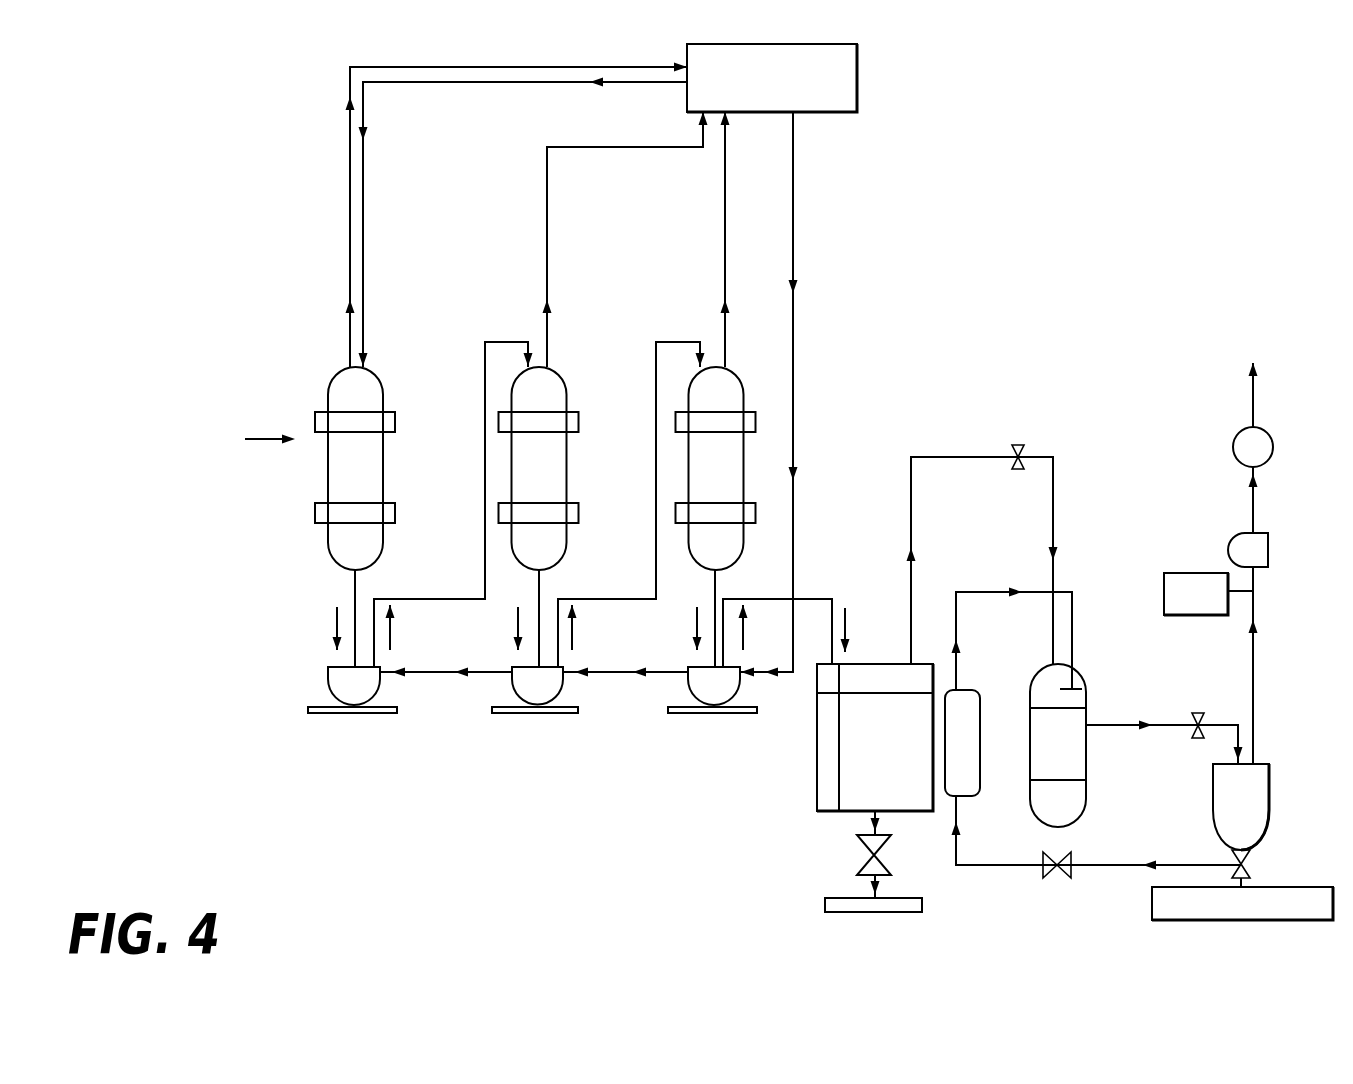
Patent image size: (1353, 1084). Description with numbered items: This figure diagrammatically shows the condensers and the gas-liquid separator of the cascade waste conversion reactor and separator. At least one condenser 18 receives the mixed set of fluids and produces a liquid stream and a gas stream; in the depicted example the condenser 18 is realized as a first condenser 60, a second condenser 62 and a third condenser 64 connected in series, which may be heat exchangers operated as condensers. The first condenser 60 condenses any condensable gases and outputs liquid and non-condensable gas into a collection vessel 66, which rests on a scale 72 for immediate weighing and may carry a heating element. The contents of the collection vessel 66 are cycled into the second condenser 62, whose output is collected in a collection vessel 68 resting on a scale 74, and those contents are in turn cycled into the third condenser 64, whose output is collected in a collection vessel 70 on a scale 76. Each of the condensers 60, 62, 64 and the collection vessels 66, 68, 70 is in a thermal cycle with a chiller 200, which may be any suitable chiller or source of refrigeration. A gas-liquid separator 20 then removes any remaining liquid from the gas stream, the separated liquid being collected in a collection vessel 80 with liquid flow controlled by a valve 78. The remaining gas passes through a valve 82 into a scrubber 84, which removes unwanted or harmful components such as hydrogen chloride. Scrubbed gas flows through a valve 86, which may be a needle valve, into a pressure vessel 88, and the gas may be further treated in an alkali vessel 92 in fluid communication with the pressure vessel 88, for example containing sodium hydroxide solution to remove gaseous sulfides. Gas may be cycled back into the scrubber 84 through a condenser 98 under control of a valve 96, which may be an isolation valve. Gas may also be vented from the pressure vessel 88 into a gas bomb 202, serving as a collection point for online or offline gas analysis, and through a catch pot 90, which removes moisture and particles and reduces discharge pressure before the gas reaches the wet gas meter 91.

The condenser 18 is at (497, 272).
The gas-liquid separator 20 is at (823, 827).
The first condenser 60 is at (328, 548).
The second condenser 62 is at (560, 365).
The third condenser 64 is at (737, 367).
The collection vessel 66 is at (328, 675).
The collection vessel 68 is at (512, 680).
The collection vessel 70 is at (688, 680).
The scale 72 is at (380, 714).
The scale 74 is at (562, 714).
The scale 76 is at (737, 714).
The valve 78 is at (890, 860).
The collection vessel 80 is at (898, 912).
The valve 82 is at (1018, 444).
The scrubber 84 is at (1086, 755).
The valve 86 is at (1198, 712).
The pressure vessel 88 is at (1269, 790).
The catch pot 90 is at (1268, 548).
The wet gas meter 91 is at (1273, 450).
The alkali vessel 92 is at (1273, 921).
The valve 96 is at (1050, 877).
The condenser 98 is at (972, 797).
The chiller 200 is at (857, 77).
The gas bomb 202 is at (1164, 598).